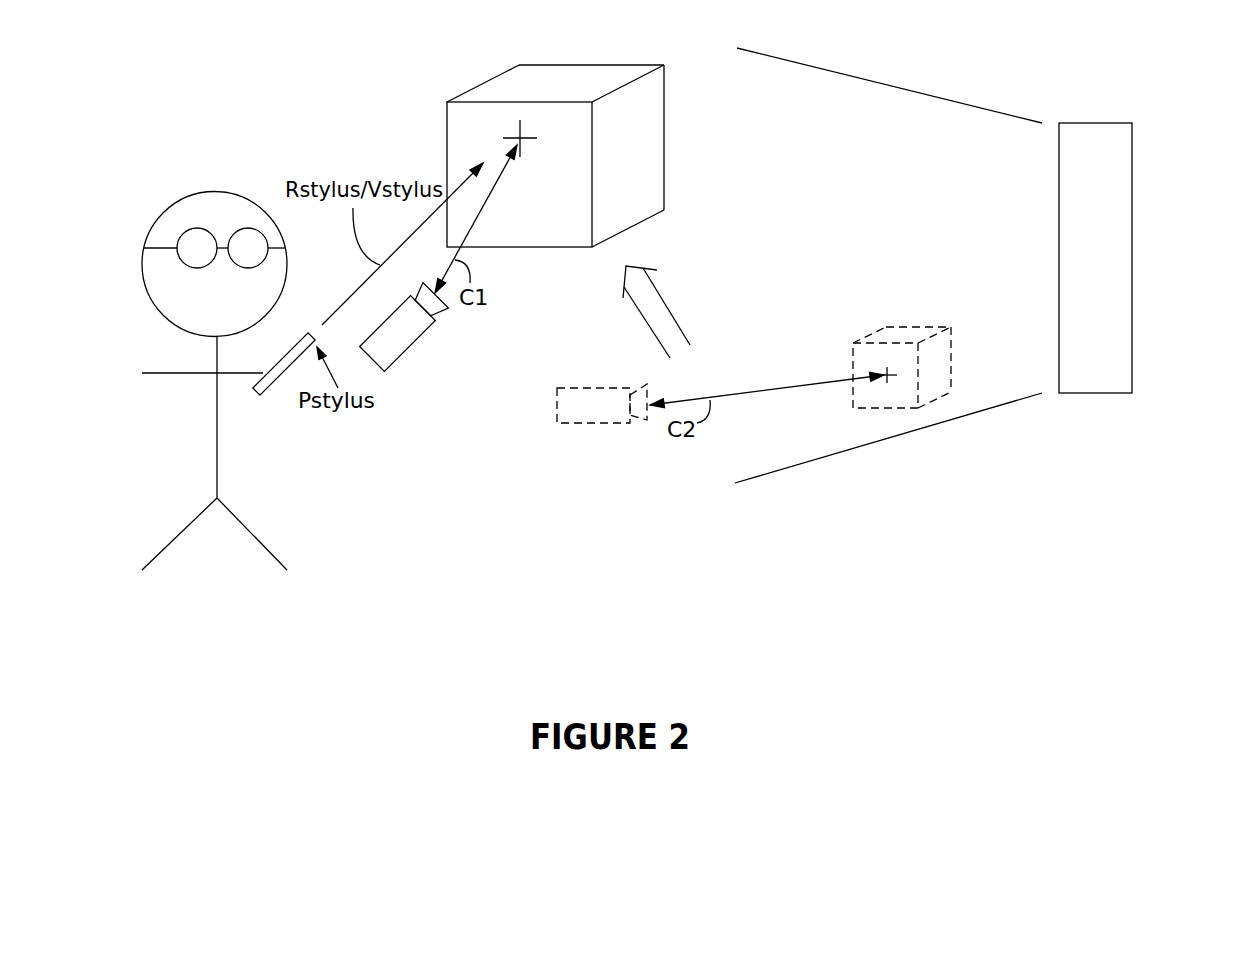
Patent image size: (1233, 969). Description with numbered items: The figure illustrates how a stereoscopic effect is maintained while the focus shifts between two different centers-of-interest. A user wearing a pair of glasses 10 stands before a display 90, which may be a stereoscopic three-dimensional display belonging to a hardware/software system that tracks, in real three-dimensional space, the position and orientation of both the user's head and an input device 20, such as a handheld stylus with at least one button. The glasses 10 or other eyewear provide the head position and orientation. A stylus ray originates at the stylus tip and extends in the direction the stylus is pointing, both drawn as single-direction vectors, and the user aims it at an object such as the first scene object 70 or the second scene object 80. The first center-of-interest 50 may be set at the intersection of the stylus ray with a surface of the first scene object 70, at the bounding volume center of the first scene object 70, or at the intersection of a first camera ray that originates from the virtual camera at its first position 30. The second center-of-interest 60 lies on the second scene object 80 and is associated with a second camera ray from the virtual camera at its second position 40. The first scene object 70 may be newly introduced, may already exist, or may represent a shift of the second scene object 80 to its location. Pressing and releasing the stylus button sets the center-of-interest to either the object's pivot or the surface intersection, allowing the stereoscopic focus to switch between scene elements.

The pair of glasses 10 is at (186, 233).
The input device 20 is at (260, 393).
The first position of a virtual camera 30 is at (392, 368).
The second position of a virtual camera 40 is at (577, 423).
The first center-of-interest 50 is at (518, 120).
The second center-of-interest 60 is at (884, 363).
The first scene object 70 is at (645, 66).
The second scene object 80 is at (915, 327).
The display 90 is at (1113, 121).